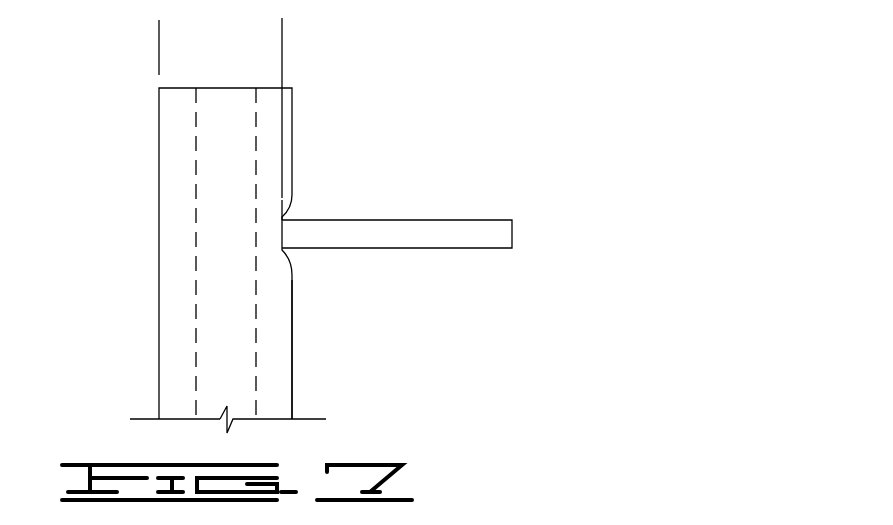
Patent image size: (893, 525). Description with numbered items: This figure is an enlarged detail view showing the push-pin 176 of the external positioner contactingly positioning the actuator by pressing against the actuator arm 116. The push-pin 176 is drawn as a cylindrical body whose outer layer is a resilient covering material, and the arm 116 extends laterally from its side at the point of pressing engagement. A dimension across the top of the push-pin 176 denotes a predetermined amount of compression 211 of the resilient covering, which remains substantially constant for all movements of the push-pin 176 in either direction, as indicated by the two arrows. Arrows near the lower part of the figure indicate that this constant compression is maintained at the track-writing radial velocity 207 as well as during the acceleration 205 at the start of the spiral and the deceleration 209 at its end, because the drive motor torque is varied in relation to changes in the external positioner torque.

The push-pin 176 is at (159, 218).
The predetermined amount of compression 211 is at (367, 37).
The arm 116 is at (428, 220).
The acceleration at the start of the spiral 205 is at (256, 326).
The track-writing radial velocity 207 is at (274, 358).
The deceleration at the end of the spiral 209 is at (356, 349).